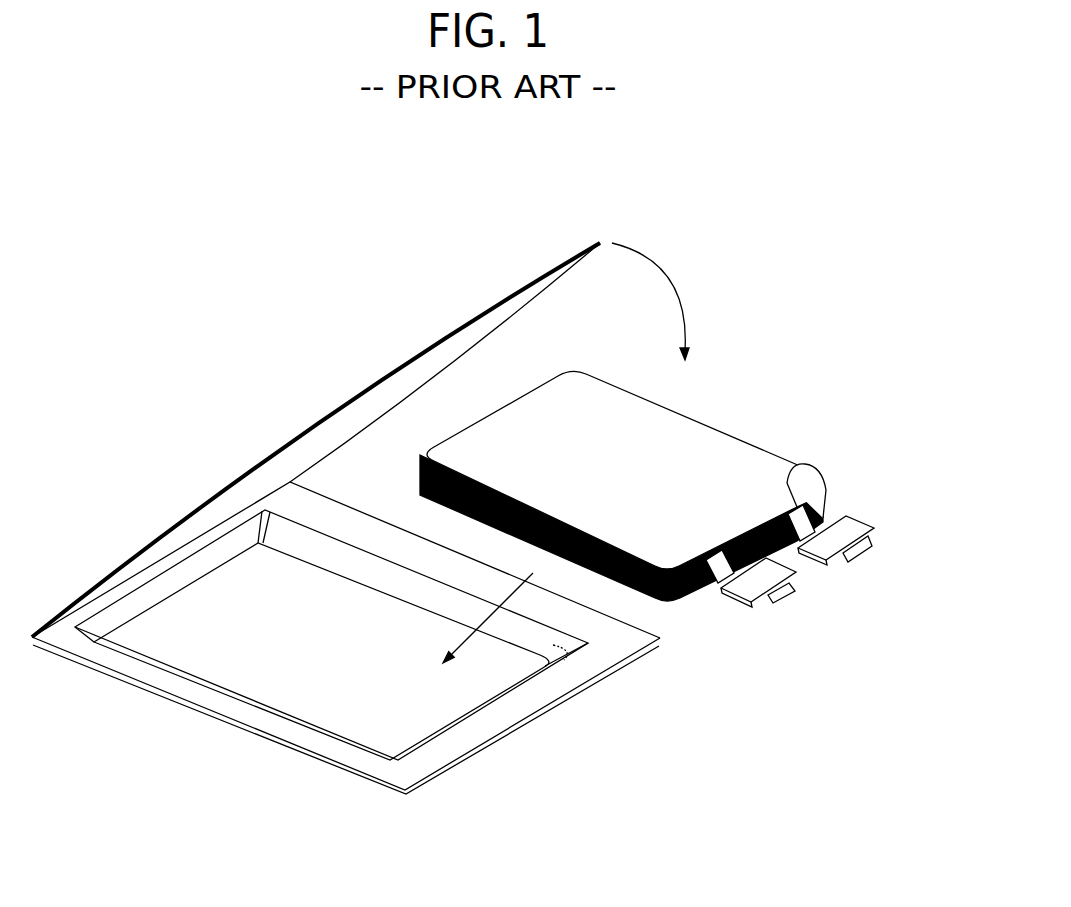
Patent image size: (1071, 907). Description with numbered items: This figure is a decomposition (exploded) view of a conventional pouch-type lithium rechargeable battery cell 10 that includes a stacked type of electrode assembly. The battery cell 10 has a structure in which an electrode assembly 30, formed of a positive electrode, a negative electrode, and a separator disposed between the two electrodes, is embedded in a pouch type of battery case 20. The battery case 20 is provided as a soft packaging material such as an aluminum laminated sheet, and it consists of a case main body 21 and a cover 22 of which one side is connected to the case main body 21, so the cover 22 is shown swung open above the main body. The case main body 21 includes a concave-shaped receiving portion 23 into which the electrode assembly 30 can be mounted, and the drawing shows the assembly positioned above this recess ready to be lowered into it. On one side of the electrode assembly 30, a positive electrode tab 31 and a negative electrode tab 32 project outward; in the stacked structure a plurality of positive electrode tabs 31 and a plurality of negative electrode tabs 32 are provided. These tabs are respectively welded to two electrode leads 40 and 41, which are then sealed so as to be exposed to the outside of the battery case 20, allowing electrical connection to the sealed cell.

The battery cell 10 is at (80, 284).
The battery case 20 is at (166, 480).
The case main body 21 is at (250, 733).
The cover 22 is at (381, 377).
The receiving portion 23 is at (208, 653).
The electrode assembly 30 is at (673, 458).
The positive electrode tab 31 is at (792, 466).
The negative electrode tab 32 is at (717, 583).
The electrode lead 40 is at (873, 536).
The electrode lead 41 is at (773, 595).